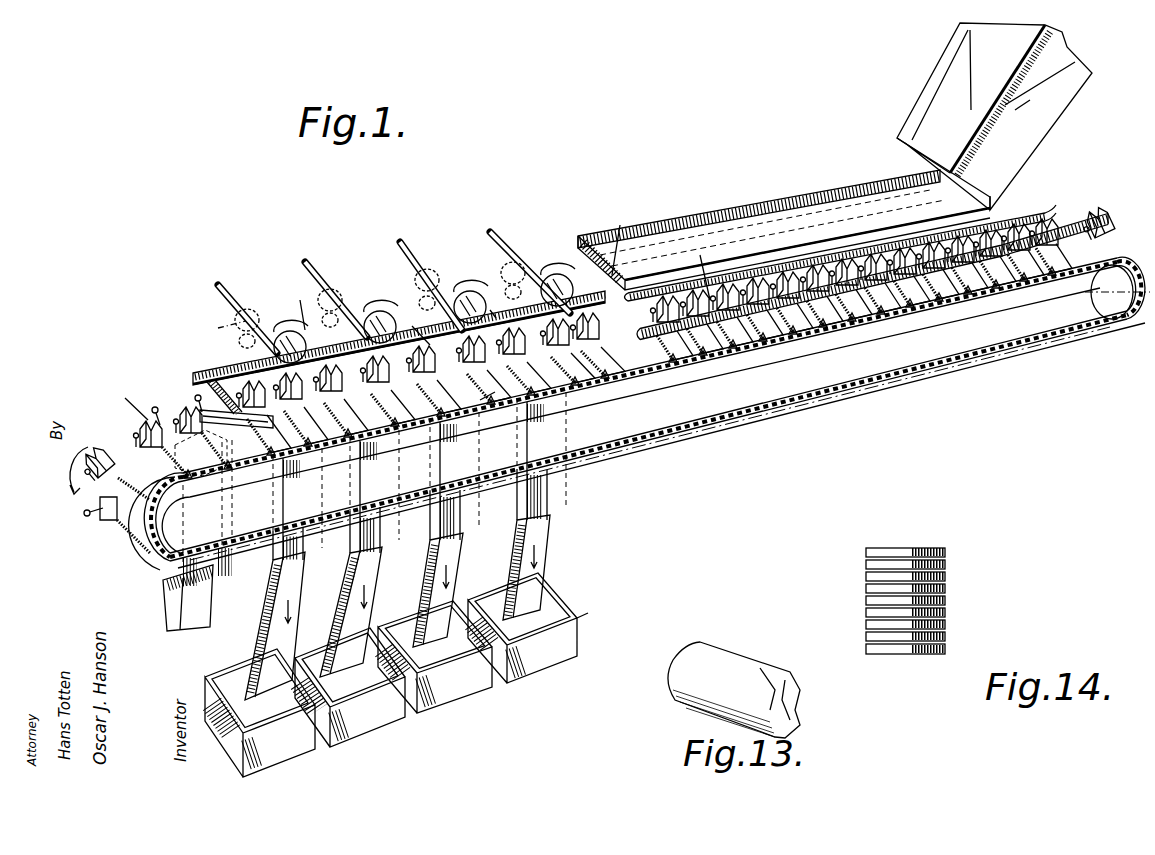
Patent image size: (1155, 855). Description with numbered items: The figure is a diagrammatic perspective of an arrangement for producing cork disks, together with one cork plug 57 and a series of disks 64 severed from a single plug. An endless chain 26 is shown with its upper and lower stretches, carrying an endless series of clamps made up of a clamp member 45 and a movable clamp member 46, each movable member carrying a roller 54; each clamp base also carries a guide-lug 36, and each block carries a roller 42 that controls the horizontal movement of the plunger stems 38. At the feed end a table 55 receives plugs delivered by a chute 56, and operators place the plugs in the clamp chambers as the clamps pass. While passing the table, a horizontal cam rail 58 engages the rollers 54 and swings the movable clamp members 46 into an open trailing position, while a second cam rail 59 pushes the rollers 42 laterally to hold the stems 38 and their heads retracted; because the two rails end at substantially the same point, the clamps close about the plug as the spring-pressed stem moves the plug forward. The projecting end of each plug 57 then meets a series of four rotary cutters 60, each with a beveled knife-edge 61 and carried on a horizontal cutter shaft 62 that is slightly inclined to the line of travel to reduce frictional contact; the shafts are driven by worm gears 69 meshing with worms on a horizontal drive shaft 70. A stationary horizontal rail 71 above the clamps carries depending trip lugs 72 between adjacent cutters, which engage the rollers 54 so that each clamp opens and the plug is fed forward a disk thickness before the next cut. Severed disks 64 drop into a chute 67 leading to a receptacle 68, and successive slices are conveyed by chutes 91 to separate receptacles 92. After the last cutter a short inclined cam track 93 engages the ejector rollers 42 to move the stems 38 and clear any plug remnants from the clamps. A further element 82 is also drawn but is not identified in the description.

In FIG. 1, the chain 26 is at (818, 400).
In FIG. 1, the guide-lug 36 is at (170, 557).
In FIG. 1, the plunger stem 38 is at (1118, 262).
In FIG. 1, the roller 42 is at (915, 310).
In FIG. 1, the clamp member 45 is at (138, 432).
In FIG. 1, the movable clamp member 46 is at (712, 370).
In FIG. 1, the roller 54 is at (175, 400).
In FIG. 1, the table 55 is at (785, 220).
In FIG. 1, the chute 56 is at (920, 118).
In FIG. 13, the cork plug 57 is at (780, 656).
In FIG. 1, the horizontal cam rail 58 is at (850, 262).
In FIG. 1, the second cam rail 59 is at (745, 360).
In FIG. 1, the rotary cutter 60 is at (292, 332).
In FIG. 1, the beveled knife-edge 61 is at (239, 397).
In FIG. 1, the cutter shaft 62 is at (394, 286).
In FIG. 14, the disk 64 is at (866, 575).
In FIG. 1, the chute 67 is at (560, 470).
In FIG. 1, the receptacle 68 is at (591, 610).
In FIG. 1, the worm gear 69 is at (235, 318).
In FIG. 1, the drive shaft 70 is at (222, 328).
In FIG. 1, the horizontal rail 71 is at (215, 370).
In FIG. 1, the trip lug 72 is at (359, 313).
In FIG. 1, the stop 82 is at (400, 318).
In FIG. 1, the chute 91 is at (178, 593).
In FIG. 1, the receptacle 92 is at (460, 700).
In FIG. 1, the cam track 93 is at (258, 432).